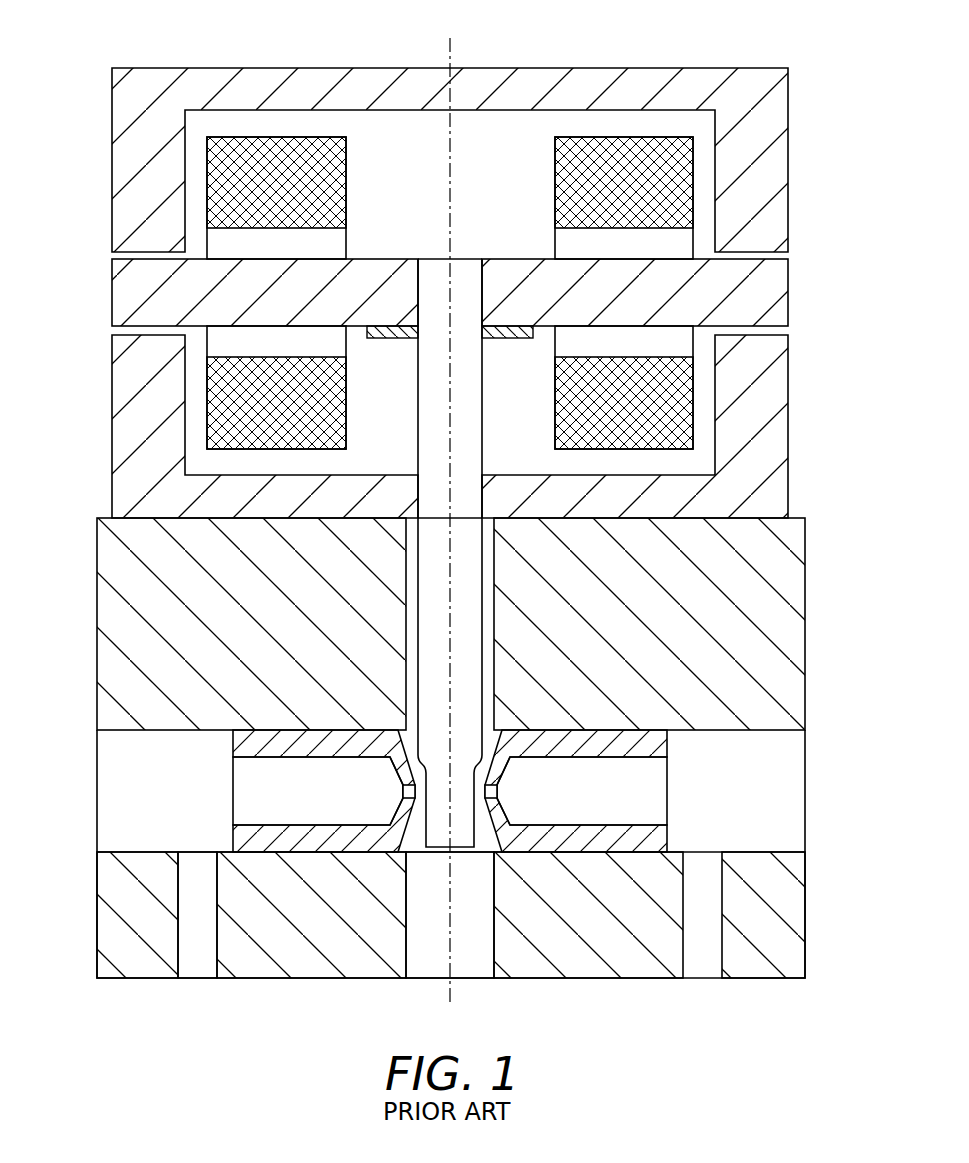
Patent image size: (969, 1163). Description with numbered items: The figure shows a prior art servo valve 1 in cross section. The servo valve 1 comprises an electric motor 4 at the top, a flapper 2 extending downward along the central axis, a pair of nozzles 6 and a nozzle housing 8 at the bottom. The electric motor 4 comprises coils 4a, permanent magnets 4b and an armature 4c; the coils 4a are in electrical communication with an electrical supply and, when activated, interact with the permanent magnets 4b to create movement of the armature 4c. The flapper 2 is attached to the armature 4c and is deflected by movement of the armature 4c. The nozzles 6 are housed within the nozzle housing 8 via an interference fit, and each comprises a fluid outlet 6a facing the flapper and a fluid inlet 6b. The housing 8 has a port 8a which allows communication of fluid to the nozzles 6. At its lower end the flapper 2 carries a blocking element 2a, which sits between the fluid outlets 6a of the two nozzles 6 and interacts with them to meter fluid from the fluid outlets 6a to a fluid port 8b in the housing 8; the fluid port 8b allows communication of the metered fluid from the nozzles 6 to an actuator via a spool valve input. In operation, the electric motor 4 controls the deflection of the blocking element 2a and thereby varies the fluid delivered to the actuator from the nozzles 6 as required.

The servo valve 1 is at (105, 54).
The flapper 2 is at (470, 400).
The blocking element 2a is at (445, 800).
The electric motor 4 is at (632, 56).
The coils 4a is at (555, 183).
The permanent magnets 4b is at (775, 160).
The armature 4c is at (775, 290).
The nozzles 6 is at (245, 836).
The fluid outlet 6a is at (400, 790).
The fluid inlet 6b is at (245, 792).
The nozzle housing 8 is at (110, 620).
The port 8a is at (197, 965).
The fluid port 8b is at (429, 965).